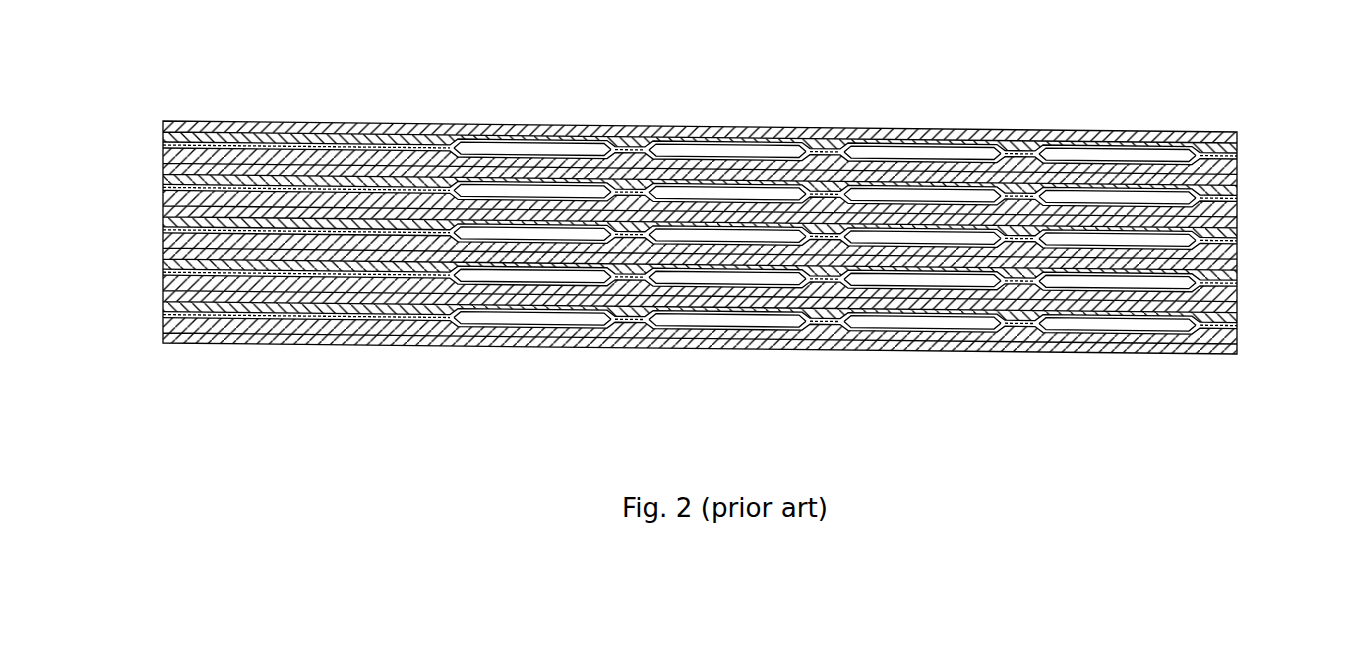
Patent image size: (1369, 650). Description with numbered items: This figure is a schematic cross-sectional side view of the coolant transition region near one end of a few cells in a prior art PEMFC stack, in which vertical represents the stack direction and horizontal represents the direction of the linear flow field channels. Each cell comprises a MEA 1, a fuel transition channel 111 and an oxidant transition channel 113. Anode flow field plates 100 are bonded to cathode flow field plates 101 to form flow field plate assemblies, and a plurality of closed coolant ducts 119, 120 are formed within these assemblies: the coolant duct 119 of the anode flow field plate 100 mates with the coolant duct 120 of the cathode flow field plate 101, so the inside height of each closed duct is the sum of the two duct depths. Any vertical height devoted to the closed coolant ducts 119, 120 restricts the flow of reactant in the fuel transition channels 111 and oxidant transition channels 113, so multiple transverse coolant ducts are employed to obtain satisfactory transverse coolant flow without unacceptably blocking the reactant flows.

The MEA 1 is at (1237, 315).
The anode flow field plate 100 is at (1237, 318).
The cathode flow field plate 101 is at (1237, 327).
The fuel transition channel 111 is at (1237, 323).
The oxidant transition channel 113 is at (1237, 335).
The coolant duct 119 is at (825, 238).
The coolant duct 120 is at (1105, 323).